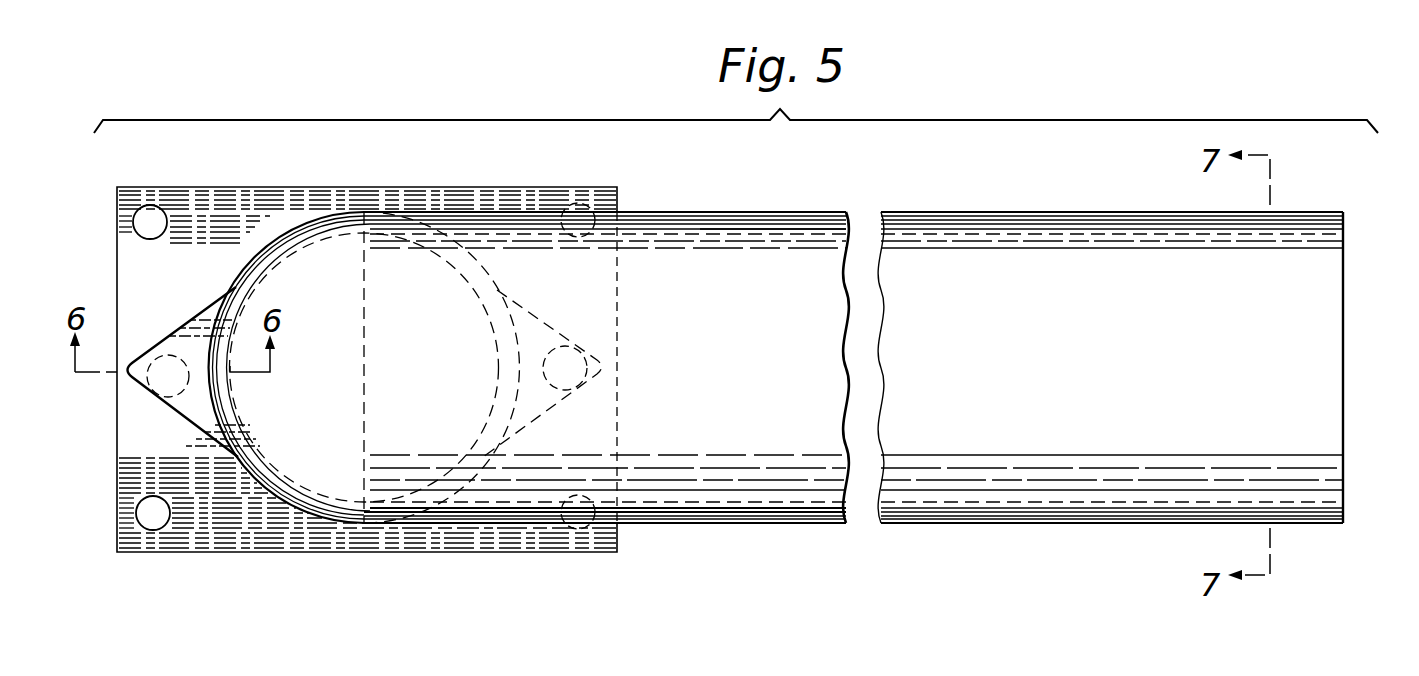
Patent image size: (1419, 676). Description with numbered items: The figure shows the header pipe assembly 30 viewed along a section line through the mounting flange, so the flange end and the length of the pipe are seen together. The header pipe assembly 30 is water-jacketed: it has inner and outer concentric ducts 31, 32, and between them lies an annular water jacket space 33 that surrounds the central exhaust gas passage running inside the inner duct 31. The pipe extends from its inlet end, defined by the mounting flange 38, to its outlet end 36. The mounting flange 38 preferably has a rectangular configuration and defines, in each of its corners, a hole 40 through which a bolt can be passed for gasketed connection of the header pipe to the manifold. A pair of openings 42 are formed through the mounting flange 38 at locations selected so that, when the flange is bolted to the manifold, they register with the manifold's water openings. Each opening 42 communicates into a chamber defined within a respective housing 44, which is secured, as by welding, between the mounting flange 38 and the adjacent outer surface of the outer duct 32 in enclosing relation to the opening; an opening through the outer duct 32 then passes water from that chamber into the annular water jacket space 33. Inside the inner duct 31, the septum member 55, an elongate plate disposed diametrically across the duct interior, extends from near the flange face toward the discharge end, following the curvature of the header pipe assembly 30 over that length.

The header pipe assembly 30 is at (1058, 178).
The inner duct 31 is at (764, 244).
The outer duct 32 is at (1118, 212).
The annular water jacket space 33 is at (1028, 512).
The outlet end 36 is at (1343, 372).
The mounting flange 38 is at (240, 528).
The hole 40 is at (146, 226).
The openings 42 is at (150, 400).
The housing 44 is at (166, 338).
The septum member 55 is at (362, 240).